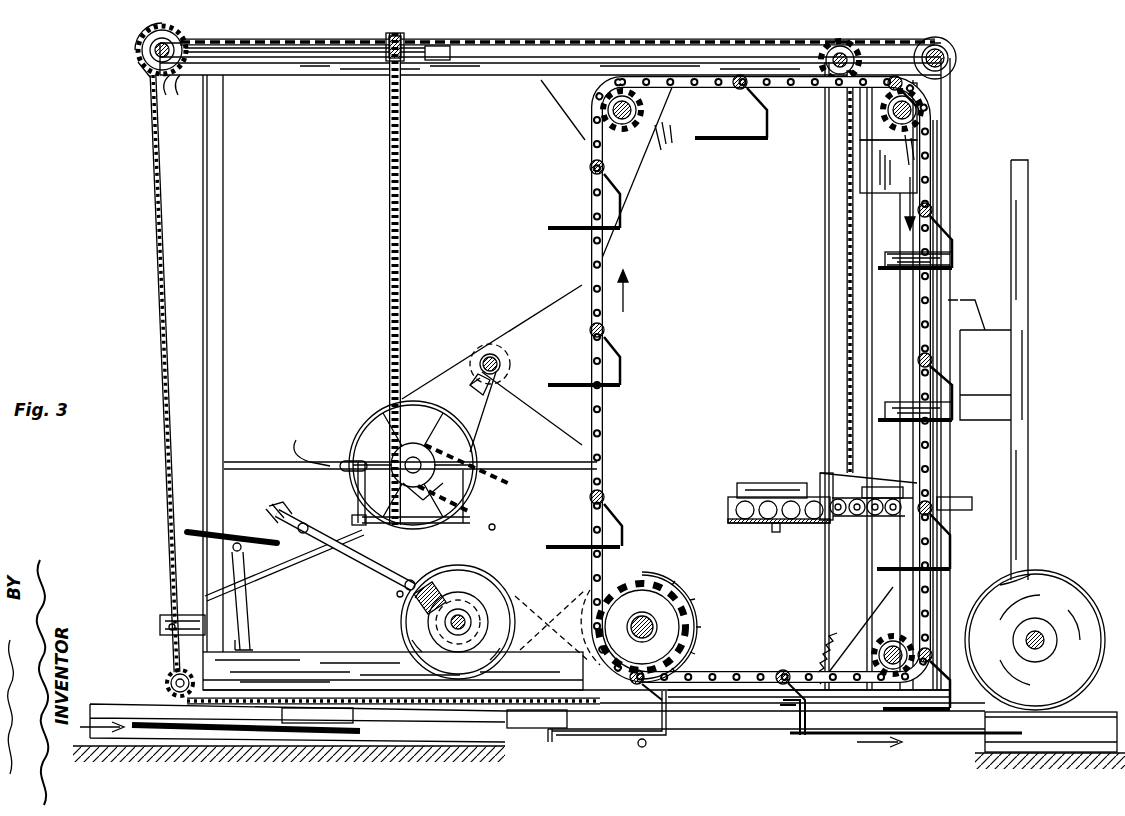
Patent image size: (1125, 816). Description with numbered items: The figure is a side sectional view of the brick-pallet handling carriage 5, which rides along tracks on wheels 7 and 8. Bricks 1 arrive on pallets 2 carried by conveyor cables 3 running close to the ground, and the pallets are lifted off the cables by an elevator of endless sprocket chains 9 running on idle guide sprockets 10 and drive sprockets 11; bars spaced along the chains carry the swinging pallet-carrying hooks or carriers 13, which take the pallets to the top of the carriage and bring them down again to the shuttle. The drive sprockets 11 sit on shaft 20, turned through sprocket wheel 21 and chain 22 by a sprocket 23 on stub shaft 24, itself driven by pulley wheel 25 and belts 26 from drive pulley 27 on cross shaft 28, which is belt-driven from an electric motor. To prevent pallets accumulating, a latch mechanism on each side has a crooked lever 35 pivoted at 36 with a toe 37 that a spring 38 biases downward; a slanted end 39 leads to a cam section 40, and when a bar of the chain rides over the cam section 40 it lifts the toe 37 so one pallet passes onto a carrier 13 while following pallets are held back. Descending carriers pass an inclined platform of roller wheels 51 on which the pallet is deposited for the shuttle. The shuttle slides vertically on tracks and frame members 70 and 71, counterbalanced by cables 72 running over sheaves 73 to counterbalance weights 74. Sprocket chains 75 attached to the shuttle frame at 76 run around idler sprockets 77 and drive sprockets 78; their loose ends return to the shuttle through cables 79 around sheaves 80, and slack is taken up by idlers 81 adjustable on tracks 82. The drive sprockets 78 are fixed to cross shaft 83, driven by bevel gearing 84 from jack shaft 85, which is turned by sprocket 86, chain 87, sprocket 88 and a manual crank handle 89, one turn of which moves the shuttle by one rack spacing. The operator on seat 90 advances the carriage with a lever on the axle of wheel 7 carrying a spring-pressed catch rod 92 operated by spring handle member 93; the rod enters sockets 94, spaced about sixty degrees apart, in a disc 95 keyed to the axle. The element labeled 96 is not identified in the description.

The bricks 1 is at (937, 262).
The pallets 2 is at (942, 268).
The conveyor cables 3 is at (958, 740).
The carriage 5 is at (223, 292).
The wheels 7 is at (482, 562).
The wheels 8 is at (1045, 595).
The endless sprocket chains 9 is at (703, 88).
The idle guide sprockets 10 is at (640, 124).
The drive sprockets 11 is at (672, 612).
The pallet carrying hooks 13 is at (620, 376).
The shaft 20 is at (645, 642).
The sprocket wheel 21 is at (680, 583).
The chain 22 is at (658, 562).
The sprocket 23 is at (470, 466).
The stub shaft 24 is at (345, 462).
The pulley wheel 25 is at (432, 451).
The belts 26 is at (442, 388).
The drive pulley 27 is at (476, 380).
The cross shaft 28 is at (500, 360).
The crooked lever 35 is at (668, 735).
The pivot 36 is at (638, 746).
The toe 37 is at (545, 742).
The spring 38 is at (823, 688).
The slanted end 39 is at (800, 712).
The cam section 40 is at (718, 700).
The roller wheels 51 is at (855, 518).
The vertical tracks and frame members 70 is at (827, 402).
The vertical tracks and frame members 71 is at (880, 460).
The cables 72 is at (862, 216).
The sheaves 73 is at (958, 50).
The counterbalance weights 74 is at (988, 330).
The sprocket chains 75 is at (165, 440).
The attachment point 76 is at (820, 476).
The idler sprockets 77 is at (842, 48).
The drive sprockets 78 is at (140, 64).
The cables 79 is at (402, 664).
The sheaves 80 is at (790, 706).
The idlers 81 is at (162, 618).
The tracks 82 is at (165, 628).
The cross shaft 83 is at (168, 45).
The bevel gearing 84 is at (185, 78).
The jack shaft 85 is at (350, 58).
The sprocket 86 is at (402, 40).
The chain 87 is at (402, 190).
The sprocket 88 is at (352, 521).
The manual crank handle 89 is at (305, 443).
The seat 90 is at (237, 543).
The spring pressed catch rod 92 is at (368, 540).
The spring handle member 93 is at (296, 514).
The sockets 94 is at (416, 606).
The disc 95 is at (480, 640).
The pivot 96 is at (494, 526).